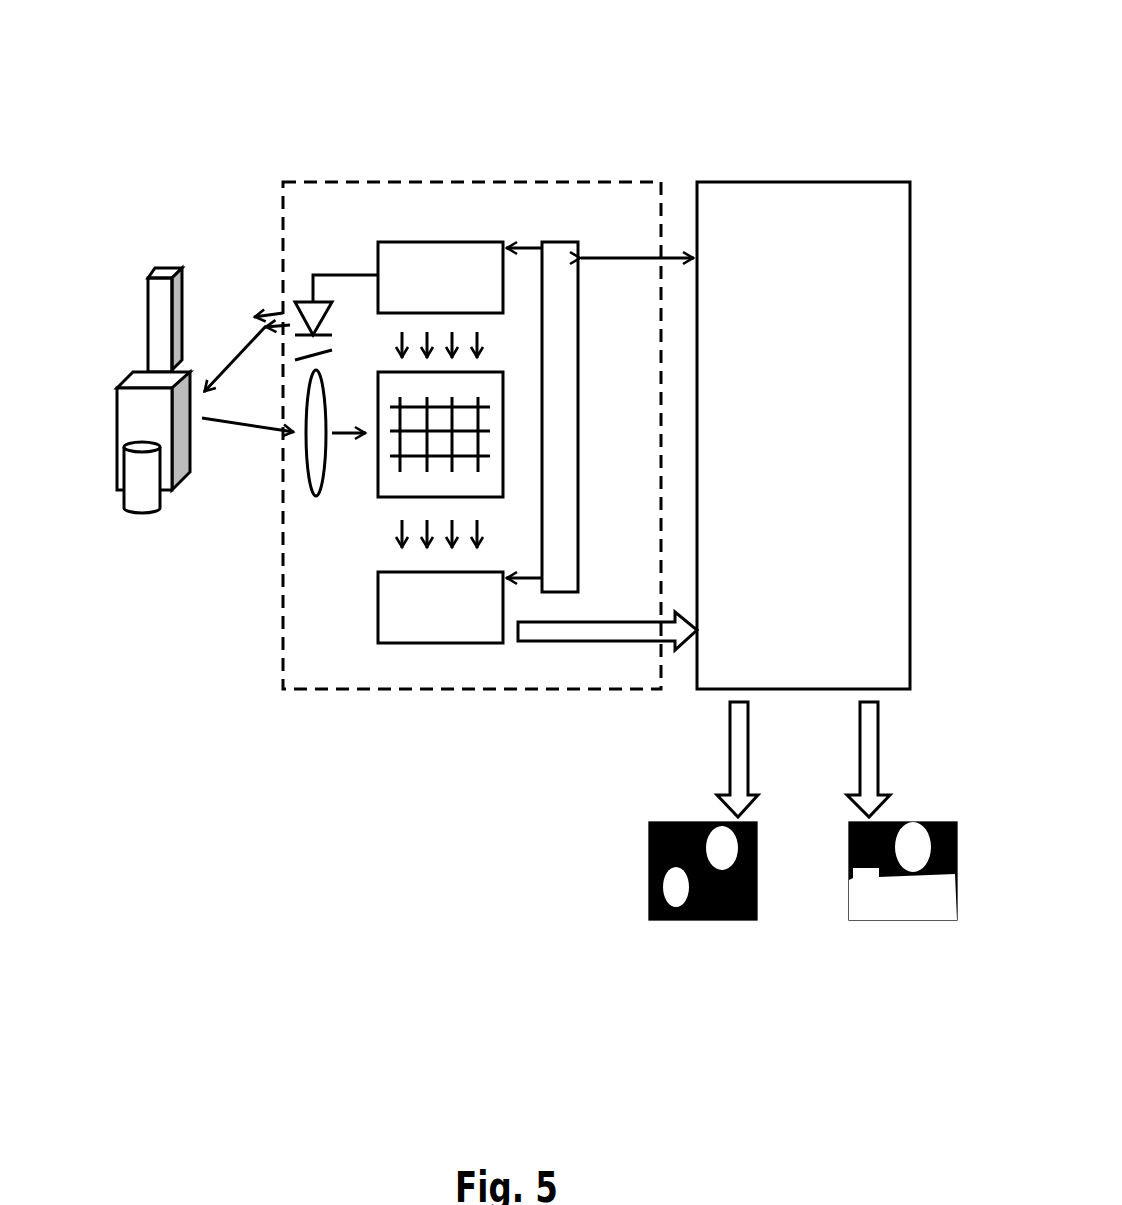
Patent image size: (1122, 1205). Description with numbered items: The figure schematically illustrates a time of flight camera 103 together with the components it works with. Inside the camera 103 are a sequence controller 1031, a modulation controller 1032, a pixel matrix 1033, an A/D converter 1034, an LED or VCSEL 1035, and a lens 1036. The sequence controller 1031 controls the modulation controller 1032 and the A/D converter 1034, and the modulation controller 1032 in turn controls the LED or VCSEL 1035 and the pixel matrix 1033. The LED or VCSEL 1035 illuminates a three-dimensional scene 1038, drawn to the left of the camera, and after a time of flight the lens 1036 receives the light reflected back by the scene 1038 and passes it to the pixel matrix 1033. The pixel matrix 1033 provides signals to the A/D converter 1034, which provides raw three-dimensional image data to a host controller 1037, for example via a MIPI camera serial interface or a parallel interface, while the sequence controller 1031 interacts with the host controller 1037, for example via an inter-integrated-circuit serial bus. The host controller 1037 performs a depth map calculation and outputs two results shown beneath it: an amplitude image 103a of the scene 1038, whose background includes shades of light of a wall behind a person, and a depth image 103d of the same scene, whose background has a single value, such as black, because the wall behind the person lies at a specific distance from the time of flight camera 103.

The time of flight camera 103 is at (315, 792).
The sequence controller 1031 is at (565, 250).
The modulation controller 1032 is at (437, 250).
The pixel matrix 1033 is at (388, 478).
The A/D converter 1034 is at (445, 630).
The LED or VCSEL 1035 is at (320, 300).
The lens 1036 is at (309, 478).
The host controller 1037 is at (722, 200).
The 3D scene 1038 is at (117, 288).
The amplitude image 103a is at (745, 1004).
The depth image 103d is at (950, 1004).